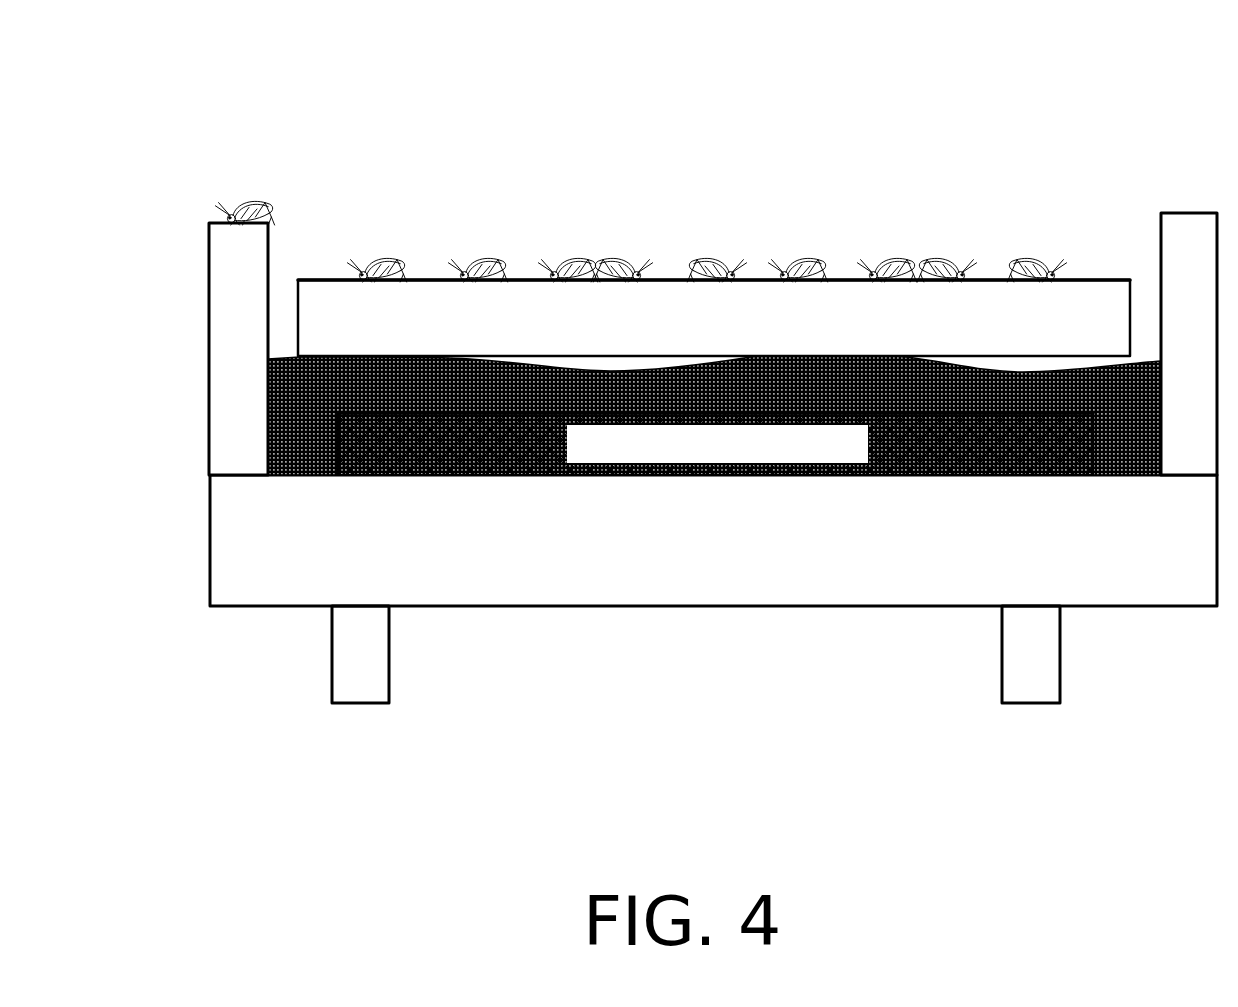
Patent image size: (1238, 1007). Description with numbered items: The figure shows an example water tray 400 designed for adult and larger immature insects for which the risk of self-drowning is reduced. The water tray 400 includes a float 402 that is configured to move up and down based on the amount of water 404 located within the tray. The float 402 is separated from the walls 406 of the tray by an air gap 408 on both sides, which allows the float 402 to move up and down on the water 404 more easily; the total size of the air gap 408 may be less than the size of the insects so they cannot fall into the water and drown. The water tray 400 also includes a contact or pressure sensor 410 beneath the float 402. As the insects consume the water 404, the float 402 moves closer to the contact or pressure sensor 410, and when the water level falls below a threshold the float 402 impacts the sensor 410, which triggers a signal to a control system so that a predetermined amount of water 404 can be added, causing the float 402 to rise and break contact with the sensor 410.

The water tray 400 is at (190, 82).
The float 402 is at (775, 331).
The water 404 is at (308, 407).
The walls 406 is at (259, 359).
The air gap 408 is at (276, 284).
The contact or pressure sensor 410 is at (844, 456).